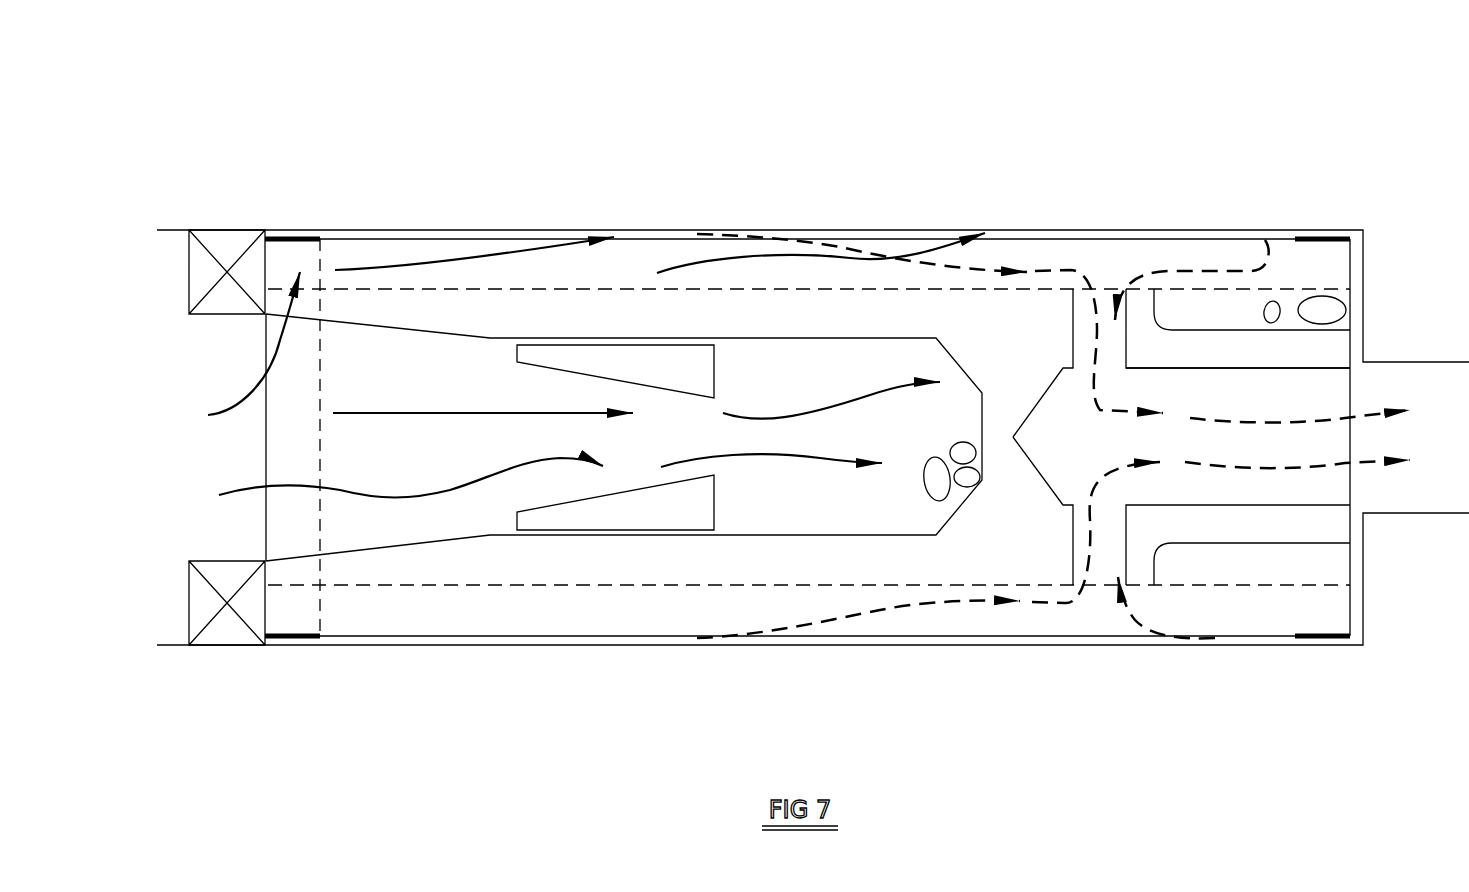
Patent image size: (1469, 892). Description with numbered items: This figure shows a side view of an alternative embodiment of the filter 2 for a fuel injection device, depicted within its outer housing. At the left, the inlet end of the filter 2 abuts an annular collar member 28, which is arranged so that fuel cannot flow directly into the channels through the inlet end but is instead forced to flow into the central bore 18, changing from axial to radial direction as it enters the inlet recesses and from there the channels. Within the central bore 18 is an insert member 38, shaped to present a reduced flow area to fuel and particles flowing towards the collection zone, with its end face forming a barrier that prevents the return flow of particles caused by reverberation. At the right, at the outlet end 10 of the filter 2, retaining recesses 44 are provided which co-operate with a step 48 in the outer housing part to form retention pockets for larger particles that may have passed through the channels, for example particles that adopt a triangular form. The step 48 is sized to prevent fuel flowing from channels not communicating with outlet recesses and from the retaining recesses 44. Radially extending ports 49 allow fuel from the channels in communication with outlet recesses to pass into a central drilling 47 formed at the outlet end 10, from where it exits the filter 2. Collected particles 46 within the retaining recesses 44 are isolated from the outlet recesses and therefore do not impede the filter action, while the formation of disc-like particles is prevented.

The filter 2 is at (652, 230).
The outlet end 10 is at (1375, 596).
The central bore 18 is at (851, 318).
The annular collar member 28 is at (243, 218).
The insert member 38 is at (637, 513).
The retaining recesses 44 is at (1195, 308).
The collected particles 46 is at (1325, 310).
The central drilling 47 is at (1317, 358).
The step 48 is at (1380, 258).
The radially extending ports 49 is at (1097, 317).